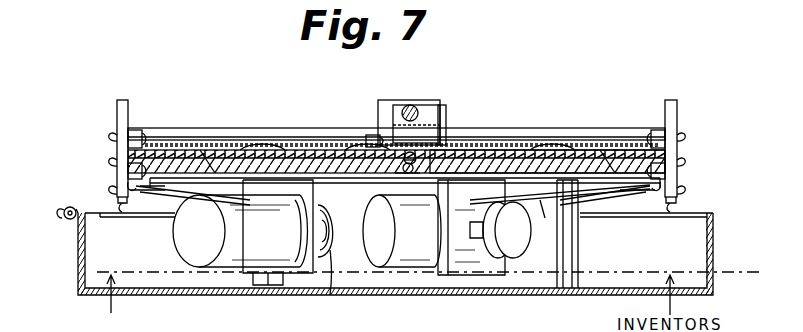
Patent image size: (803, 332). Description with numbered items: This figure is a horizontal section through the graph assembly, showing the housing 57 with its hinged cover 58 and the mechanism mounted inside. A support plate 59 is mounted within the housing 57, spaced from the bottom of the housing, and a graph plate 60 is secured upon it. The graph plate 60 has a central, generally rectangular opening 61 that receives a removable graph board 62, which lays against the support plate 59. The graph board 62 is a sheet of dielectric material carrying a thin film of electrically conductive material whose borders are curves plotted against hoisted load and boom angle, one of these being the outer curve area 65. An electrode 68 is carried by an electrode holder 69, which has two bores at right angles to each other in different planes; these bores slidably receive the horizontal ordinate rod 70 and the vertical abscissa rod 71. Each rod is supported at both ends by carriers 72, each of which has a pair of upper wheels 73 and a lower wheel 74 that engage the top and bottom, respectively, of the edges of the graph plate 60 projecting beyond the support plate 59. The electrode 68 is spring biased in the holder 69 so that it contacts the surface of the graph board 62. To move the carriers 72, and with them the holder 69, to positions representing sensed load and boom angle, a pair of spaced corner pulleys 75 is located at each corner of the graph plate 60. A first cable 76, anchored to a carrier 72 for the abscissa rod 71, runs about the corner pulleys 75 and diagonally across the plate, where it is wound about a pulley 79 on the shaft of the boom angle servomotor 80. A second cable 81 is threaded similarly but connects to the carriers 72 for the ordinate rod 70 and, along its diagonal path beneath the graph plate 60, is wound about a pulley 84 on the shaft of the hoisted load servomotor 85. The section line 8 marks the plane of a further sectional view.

The section line 8- 8 is at (428, 283).
The housing 57 is at (713, 225).
The hinged cover 58 is at (60, 208).
The support plate 59 is at (588, 165).
The graph plate 60 is at (178, 150).
The central opening 61 is at (218, 150).
The graph board 62 is at (322, 150).
The outer curve area 65 is at (245, 150).
The electrode 68 is at (455, 158).
The electrode holder 69 is at (446, 105).
The horizontal ordinate rod 70 is at (287, 130).
The vertical abscissa rod 71 is at (411, 106).
The carriers 72 is at (117, 103).
The upper wheels 73 is at (145, 132).
The lower wheel 74 is at (128, 172).
The corner pulleys 75 is at (155, 195).
The first cable 76 is at (485, 199).
The pulley 79 is at (483, 245).
The boom angle servomotor 80 is at (405, 227).
The second cable 81 is at (340, 210).
The pulley 84 is at (330, 290).
The hoisted load servomotor 85 is at (243, 232).